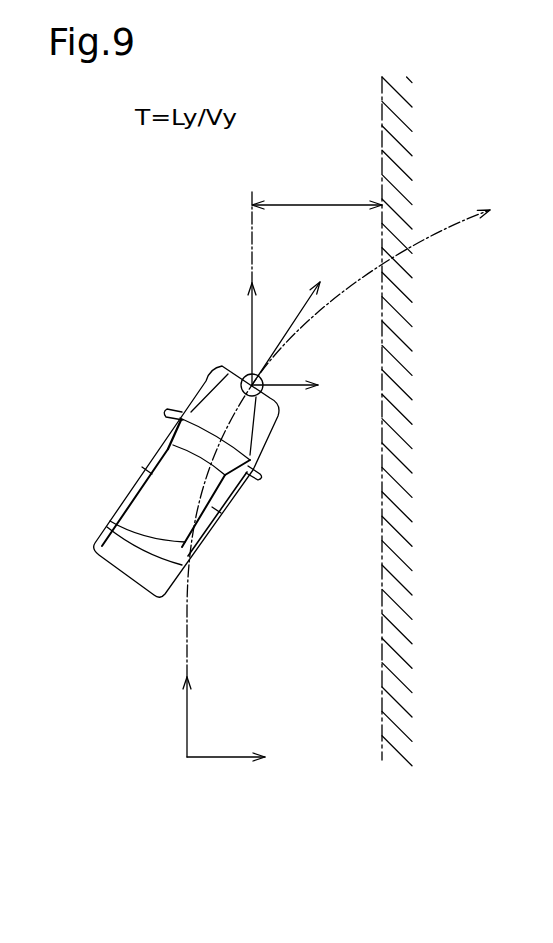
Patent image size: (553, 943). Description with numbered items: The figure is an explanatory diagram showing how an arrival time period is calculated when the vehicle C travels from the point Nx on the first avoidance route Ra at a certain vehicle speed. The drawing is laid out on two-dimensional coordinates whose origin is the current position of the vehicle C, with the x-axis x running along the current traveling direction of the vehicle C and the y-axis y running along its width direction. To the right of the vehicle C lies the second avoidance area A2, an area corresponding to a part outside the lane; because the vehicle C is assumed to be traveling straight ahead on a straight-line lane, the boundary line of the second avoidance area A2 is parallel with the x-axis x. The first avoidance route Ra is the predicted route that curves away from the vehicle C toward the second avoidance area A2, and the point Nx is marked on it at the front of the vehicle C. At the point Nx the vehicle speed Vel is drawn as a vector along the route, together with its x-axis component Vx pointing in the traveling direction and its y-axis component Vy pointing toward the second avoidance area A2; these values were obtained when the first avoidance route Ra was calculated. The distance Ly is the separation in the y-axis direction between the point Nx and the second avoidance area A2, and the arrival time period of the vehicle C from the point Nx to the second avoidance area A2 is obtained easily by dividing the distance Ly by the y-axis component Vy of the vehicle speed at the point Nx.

The vehicle C is at (143, 460).
The second avoidance area A2 is at (382, 508).
The point on the first avoidance route Nx is at (240, 370).
The first avoidance route Ra is at (357, 438).
The vehicle speed Vel is at (296, 321).
The x-axis component of the vehicle speed Vx is at (234, 334).
The y-axis component of the vehicle speed Vy is at (286, 397).
The distance between the point Nx and the second avoidance area in the y-axis direct Ly is at (317, 229).
The x-axis x is at (196, 715).
The y-axis y is at (227, 768).